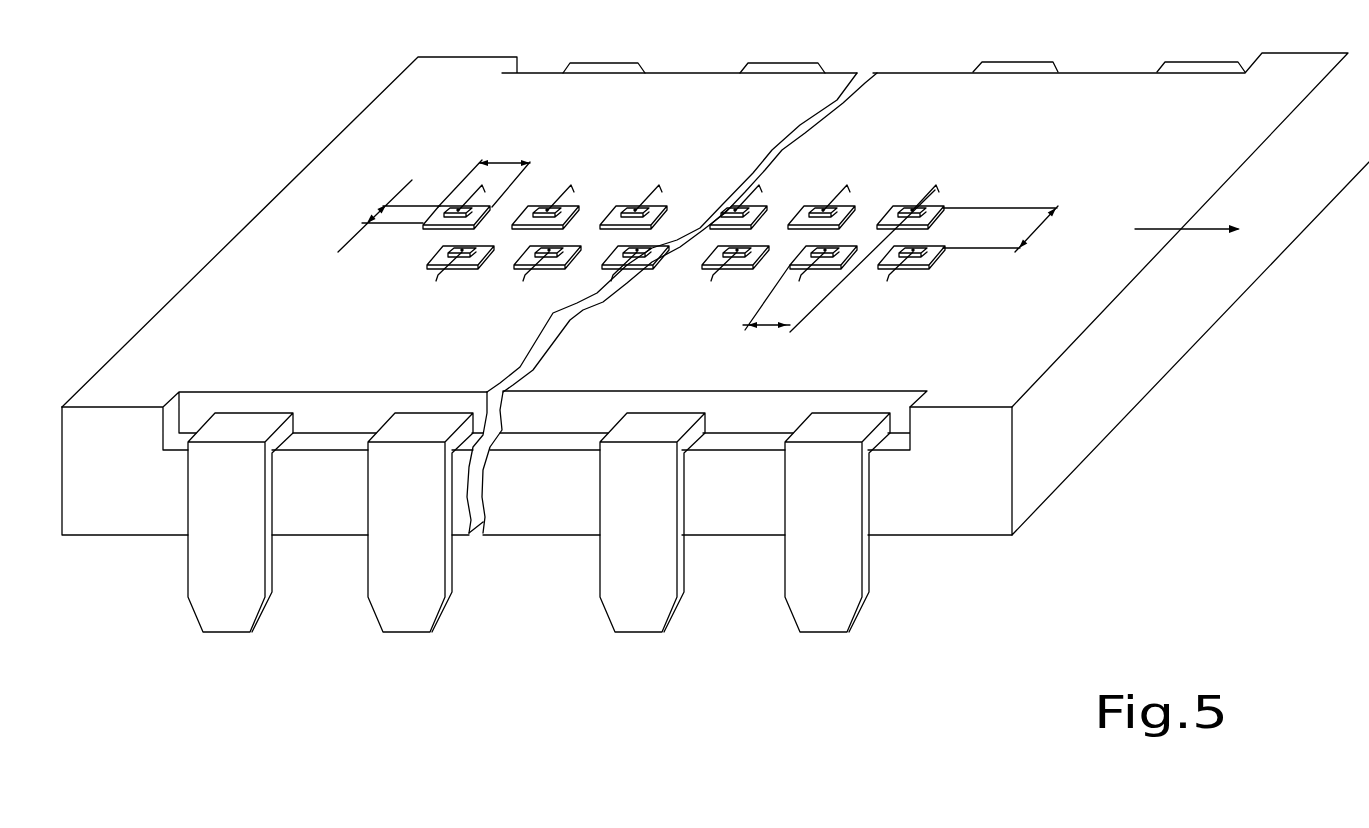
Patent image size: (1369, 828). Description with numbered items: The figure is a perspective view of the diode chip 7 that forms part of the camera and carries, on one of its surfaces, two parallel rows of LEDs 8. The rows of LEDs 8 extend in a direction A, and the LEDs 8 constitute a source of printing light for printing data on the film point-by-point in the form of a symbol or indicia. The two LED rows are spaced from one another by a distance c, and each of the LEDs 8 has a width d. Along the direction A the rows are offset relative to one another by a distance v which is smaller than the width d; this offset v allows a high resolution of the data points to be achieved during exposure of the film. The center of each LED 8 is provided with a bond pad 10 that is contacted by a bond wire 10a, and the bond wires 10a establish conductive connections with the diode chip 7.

The diode chip 7 is at (1147, 383).
The LED 8 is at (430, 255).
The bond pad 10 is at (900, 207).
The bond wire 10a is at (929, 189).
The width d is at (379, 211).
The distance c is at (1043, 229).
The distance v is at (770, 328).
The direction A is at (1167, 226).